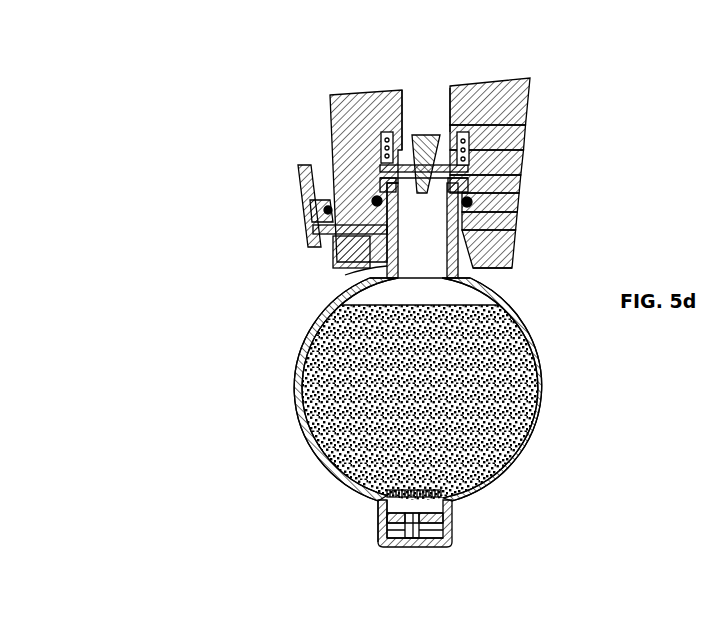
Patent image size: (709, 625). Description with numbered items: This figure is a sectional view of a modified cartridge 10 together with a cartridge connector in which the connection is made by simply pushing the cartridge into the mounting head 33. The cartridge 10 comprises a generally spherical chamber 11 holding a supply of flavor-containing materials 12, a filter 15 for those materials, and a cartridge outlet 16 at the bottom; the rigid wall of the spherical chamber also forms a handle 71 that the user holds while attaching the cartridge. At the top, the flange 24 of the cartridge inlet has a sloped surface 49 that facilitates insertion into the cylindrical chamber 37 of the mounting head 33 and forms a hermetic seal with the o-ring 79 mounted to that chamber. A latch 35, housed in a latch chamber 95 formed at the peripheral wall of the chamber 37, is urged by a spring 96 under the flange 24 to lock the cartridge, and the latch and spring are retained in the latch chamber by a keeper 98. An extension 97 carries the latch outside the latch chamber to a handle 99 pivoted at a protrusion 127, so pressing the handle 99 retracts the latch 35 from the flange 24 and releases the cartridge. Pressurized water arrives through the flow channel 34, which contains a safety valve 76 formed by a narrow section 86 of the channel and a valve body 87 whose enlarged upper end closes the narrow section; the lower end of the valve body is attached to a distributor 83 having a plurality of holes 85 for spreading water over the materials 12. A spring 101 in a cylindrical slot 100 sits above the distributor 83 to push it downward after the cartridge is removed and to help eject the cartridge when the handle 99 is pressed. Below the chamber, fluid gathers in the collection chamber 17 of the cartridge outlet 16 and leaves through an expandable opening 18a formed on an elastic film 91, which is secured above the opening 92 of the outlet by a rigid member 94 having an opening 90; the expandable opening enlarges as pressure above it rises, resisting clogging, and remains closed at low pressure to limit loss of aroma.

The cartridge 10 is at (297, 409).
The spherical chamber 11 is at (545, 366).
The flavor-containing materials 12 is at (520, 455).
The filter 15 is at (380, 505).
The cartridge outlet 16 is at (562, 568).
The collection chamber 17 is at (427, 505).
The expandable opening 18a is at (414, 545).
The flange 24 is at (513, 228).
The mounting head 33 is at (518, 269).
The flow channel 34 is at (405, 117).
The latch 35 is at (420, 291).
The cylindrical chamber 37 is at (513, 253).
The sloped surface 49 is at (513, 193).
The handle 71 is at (540, 410).
The safety valve 76 is at (428, 110).
The o-ring 79 is at (513, 211).
The distributor 83 is at (518, 175).
The holes 85 is at (405, 190).
The narrow section 86 is at (440, 143).
The valve body 87 is at (421, 134).
The opening 90 is at (450, 526).
The elastic film 91 is at (385, 540).
The opening 92 is at (418, 546).
The rigid member 94 is at (398, 521).
The latch chamber 95 is at (350, 268).
The spring 96 is at (338, 255).
The extension 97 is at (313, 230).
The keeper 98 is at (322, 216).
The handle 99 is at (300, 176).
The cylindrical slot 100 is at (508, 123).
The spring 101 is at (517, 143).
The protrusion 127 is at (327, 205).